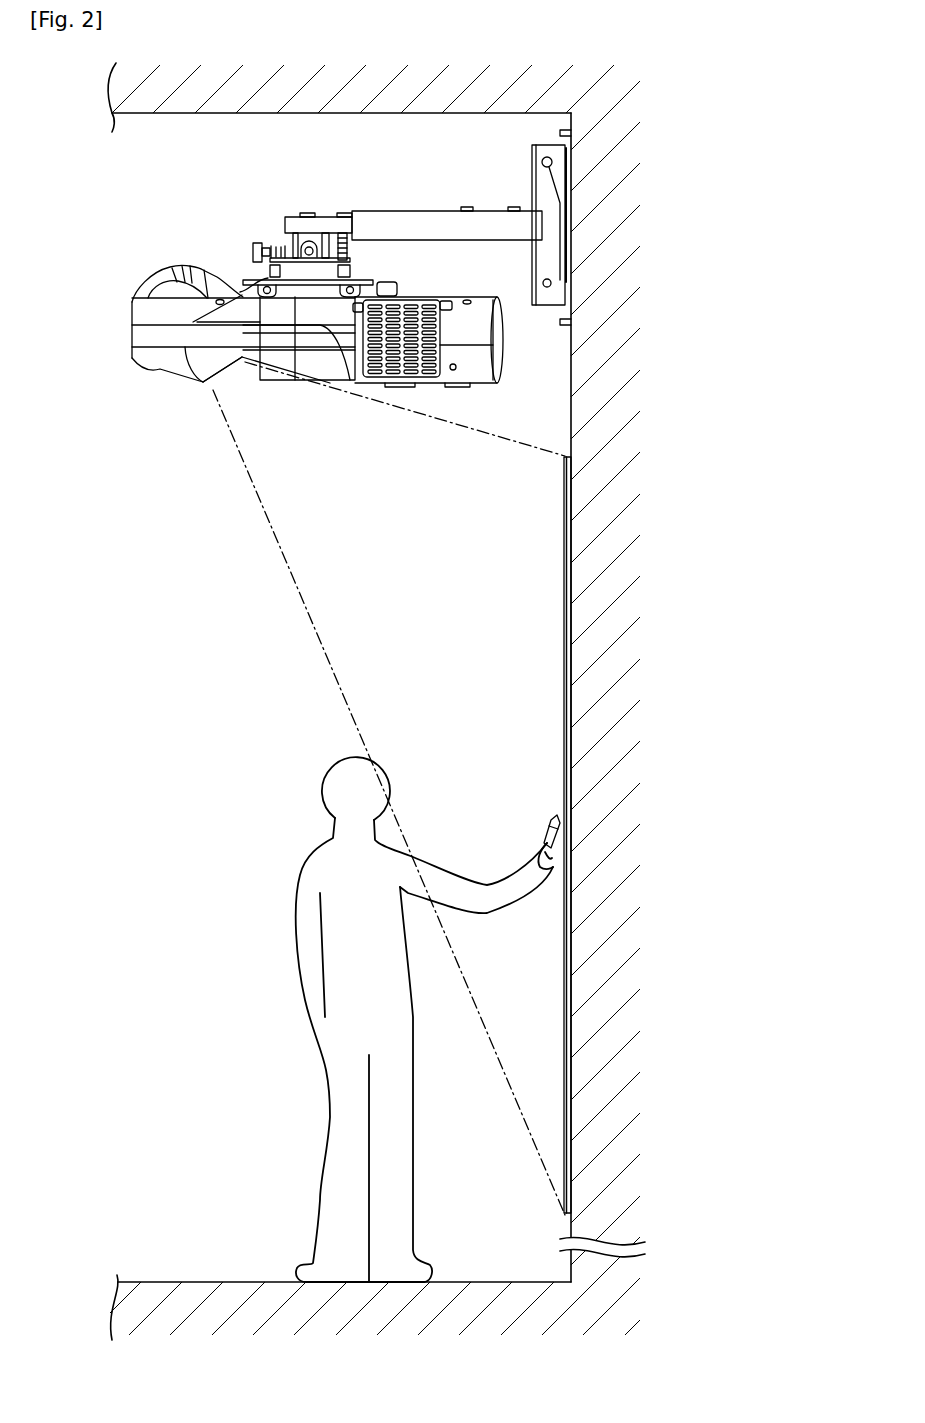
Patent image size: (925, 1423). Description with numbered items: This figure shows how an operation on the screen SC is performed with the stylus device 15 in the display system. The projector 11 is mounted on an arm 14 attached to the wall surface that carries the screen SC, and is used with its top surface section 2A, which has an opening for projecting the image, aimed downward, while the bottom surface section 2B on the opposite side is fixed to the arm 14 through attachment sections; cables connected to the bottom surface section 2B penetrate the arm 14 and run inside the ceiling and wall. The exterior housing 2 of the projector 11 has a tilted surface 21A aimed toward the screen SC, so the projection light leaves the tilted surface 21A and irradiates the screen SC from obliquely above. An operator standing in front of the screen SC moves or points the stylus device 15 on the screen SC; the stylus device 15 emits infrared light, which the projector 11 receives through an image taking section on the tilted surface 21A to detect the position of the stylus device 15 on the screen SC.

The exterior housing 2 is at (146, 310).
The top surface section 2A is at (166, 378).
The bottom surface section 2B is at (430, 297).
The projector 11 is at (133, 340).
The arm 14 is at (412, 210).
The stylus device 15 is at (543, 831).
The tilted surface 21A is at (225, 380).
The screen SC is at (566, 563).